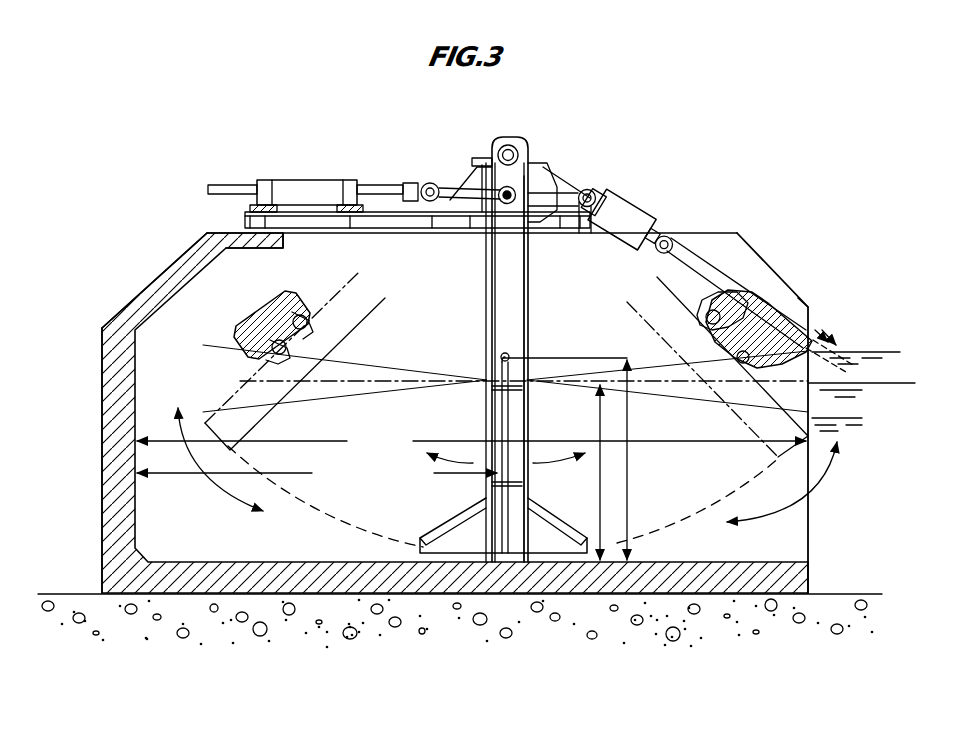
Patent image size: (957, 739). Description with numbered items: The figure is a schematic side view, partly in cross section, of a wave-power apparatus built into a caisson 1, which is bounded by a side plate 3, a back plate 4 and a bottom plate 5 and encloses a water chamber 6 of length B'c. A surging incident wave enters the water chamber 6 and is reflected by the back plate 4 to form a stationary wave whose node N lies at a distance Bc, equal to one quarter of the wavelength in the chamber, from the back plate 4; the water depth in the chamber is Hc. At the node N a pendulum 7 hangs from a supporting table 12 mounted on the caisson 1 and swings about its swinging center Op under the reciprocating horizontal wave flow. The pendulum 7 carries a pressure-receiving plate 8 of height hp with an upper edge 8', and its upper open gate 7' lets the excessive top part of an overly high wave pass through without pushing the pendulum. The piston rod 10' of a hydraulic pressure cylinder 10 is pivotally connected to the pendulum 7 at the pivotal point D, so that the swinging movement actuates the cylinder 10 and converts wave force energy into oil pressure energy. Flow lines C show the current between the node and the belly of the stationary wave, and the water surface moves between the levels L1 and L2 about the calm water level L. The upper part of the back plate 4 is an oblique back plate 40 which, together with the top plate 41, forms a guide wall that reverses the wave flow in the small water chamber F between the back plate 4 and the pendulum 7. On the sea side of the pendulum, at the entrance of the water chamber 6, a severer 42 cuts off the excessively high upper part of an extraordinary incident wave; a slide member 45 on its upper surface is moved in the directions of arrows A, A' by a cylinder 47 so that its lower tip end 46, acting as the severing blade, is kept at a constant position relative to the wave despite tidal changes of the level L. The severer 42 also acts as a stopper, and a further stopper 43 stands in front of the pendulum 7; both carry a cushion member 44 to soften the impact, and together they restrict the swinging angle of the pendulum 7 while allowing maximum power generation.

The caisson 1 is at (98, 418).
The side plate 3 is at (855, 362).
The back plate 4 is at (100, 481).
The bottom plate 5 is at (301, 594).
The water chamber 6 is at (800, 550).
The pendulum 7 is at (503, 349).
The upper open gate or mouth of the pendulum 7' is at (543, 369).
The pressure-receiving plate 8 is at (532, 457).
The upper edge of the pressure-receiving plate 8' is at (539, 338).
The hydraulic pressure cylinder 10 is at (285, 168).
The piston rod 10' is at (433, 143).
The supporting table 12 is at (392, 210).
The oblique back plate 40 is at (163, 283).
The top plate 41 is at (230, 230).
The severer 42 is at (728, 300).
The stopper 43 is at (267, 318).
The cushion member 44 is at (318, 326).
The slide member 45 is at (810, 310).
The lower tip end of the slide member 46 is at (858, 357).
The cylinder 47 is at (618, 212).
The node of the stationary wave N is at (490, 378).
The pivotal point of the cylinder D is at (513, 195).
The swinging center of the pendulum Op is at (518, 150).
The sliding direction arrow A is at (841, 333).
The sliding direction arrow A' is at (828, 322).
The calm water level L is at (871, 385).
The swinging water level L1 is at (873, 355).
The swinging water level L2 is at (856, 417).
The water depth in the water chamber Hc is at (598, 472).
The height of the pressure-receiving plate hp is at (579, 459).
The length of the water chamber B'c is at (471, 438).
The distance between the back plate and the pendulum Bc is at (317, 475).
The current flow lines C is at (215, 492).
The small water chamber F is at (228, 543).